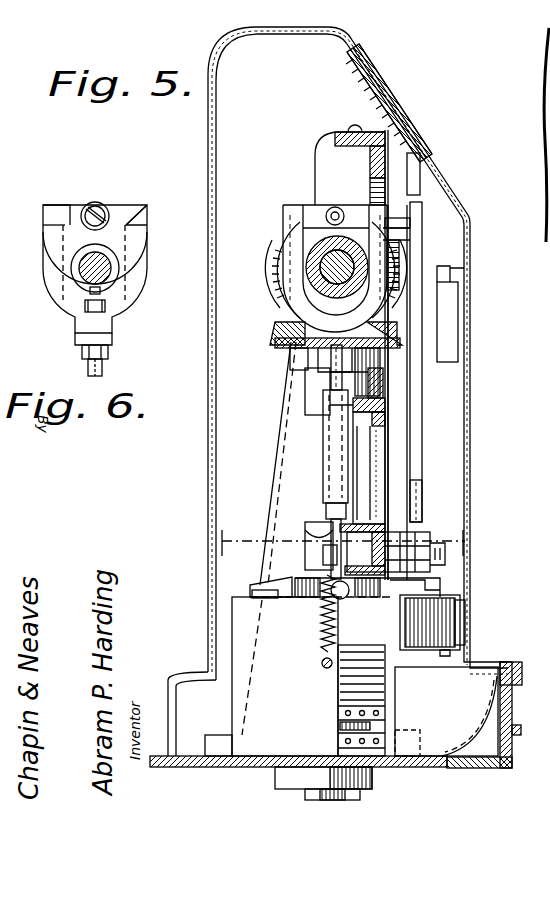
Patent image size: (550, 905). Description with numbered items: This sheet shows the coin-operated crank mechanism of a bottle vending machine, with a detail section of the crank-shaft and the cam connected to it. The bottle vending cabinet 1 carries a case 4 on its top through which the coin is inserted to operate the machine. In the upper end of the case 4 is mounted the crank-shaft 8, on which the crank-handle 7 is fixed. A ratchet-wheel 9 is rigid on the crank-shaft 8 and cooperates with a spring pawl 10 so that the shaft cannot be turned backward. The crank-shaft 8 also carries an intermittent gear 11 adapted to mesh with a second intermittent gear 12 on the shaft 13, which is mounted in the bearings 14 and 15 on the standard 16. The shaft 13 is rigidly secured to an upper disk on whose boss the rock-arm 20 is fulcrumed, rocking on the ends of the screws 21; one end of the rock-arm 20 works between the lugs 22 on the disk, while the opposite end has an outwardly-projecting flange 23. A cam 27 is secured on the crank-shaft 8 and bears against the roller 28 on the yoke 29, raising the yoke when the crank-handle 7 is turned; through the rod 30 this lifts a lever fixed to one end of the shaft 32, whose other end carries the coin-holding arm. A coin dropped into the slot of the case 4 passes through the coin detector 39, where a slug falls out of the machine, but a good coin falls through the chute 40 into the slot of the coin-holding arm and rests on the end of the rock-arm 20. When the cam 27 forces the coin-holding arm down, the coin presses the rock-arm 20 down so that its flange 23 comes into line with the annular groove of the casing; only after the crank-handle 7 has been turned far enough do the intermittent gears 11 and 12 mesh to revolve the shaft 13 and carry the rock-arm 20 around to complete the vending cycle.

In FIG. 6, the bottle vending cabinet 1 is at (511, 748).
In FIG. 6, the case 4 is at (455, 207).
In FIG. 6, the crank-handle 7 is at (343, 541).
In FIG. 5, the crank-shaft 8 is at (112, 262).
In FIG. 6, the crank-shaft 8 is at (330, 272).
In FIG. 6, the ratchet-wheel 9 is at (300, 312).
In FIG. 6, the spring pawl 10 is at (372, 188).
In FIG. 6, the intermittent gear 11 is at (278, 272).
In FIG. 6, the intermittent gear 12 is at (292, 342).
In FIG. 6, the shaft 13 is at (355, 380).
In FIG. 6, the bearing 14 is at (305, 390).
In FIG. 6, the bearing 15 is at (316, 520).
In FIG. 6, the standard 16 is at (386, 475).
In FIG. 6, the rock-arm 20 is at (290, 582).
In FIG. 6, the screws 21 is at (342, 598).
In FIG. 6, the lugs 22 is at (269, 538).
In FIG. 6, the outwardly-projecting flange 23 is at (432, 594).
In FIG. 5, the cam 27 is at (128, 224).
In FIG. 5, the roller 28 is at (95, 205).
In FIG. 6, the roller 28 is at (330, 198).
In FIG. 5, the yoke 29 is at (60, 212).
In FIG. 6, the yoke 29 is at (400, 240).
In FIG. 6, the rod 30 is at (306, 524).
In FIG. 6, the shaft 32 is at (432, 535).
In FIG. 6, the coin detector 39 is at (422, 418).
In FIG. 6, the chute 40 is at (423, 495).